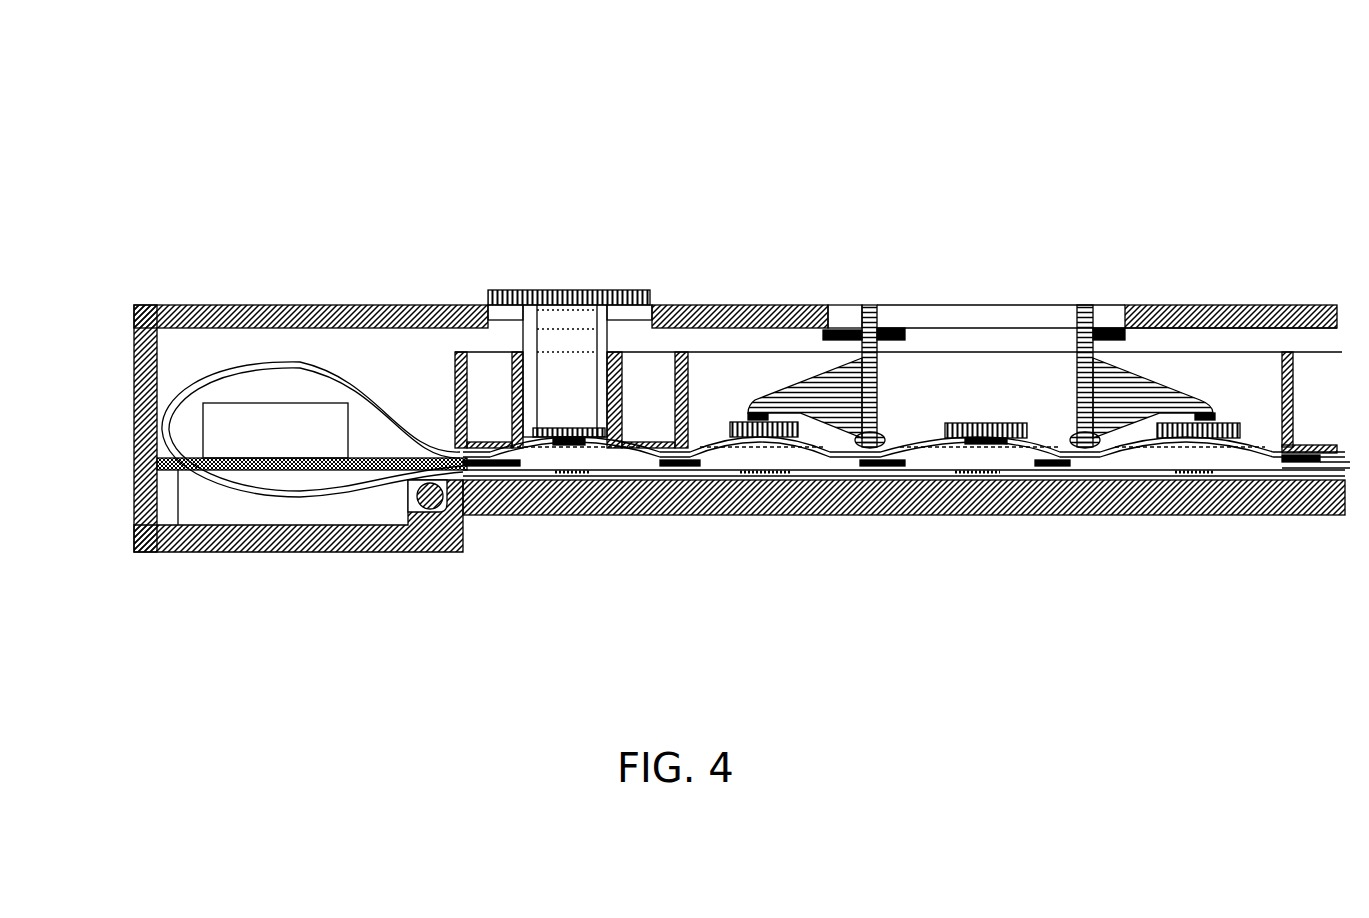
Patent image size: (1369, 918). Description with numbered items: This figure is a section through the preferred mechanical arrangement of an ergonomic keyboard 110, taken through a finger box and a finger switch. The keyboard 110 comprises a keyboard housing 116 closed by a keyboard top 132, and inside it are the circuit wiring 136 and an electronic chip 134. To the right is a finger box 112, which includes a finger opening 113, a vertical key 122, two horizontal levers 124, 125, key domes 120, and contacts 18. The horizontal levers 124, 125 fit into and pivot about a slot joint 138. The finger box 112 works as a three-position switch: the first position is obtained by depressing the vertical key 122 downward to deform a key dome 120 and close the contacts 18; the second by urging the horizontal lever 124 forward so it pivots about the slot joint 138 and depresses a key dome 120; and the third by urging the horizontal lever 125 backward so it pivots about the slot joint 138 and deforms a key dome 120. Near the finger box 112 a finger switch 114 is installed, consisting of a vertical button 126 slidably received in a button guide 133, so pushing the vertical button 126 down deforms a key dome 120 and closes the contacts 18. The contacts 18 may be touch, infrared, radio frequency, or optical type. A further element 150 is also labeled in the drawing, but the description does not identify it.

The contacts 18 is at (950, 450).
The ergonomic keyboard 110 is at (697, 80).
The finger box 112 is at (881, 298).
The finger opening 113 is at (1038, 378).
The finger switch 114 is at (480, 150).
The keyboard housing 116 is at (268, 554).
The key dome 120 is at (540, 453).
The vertical key 122 is at (973, 422).
The horizontal lever 124 is at (890, 376).
The horizontal lever 125 is at (1155, 380).
The vertical button 126 is at (556, 290).
The keyboard top 132 is at (307, 305).
The button guide 133 is at (630, 393).
The electronic chip 134 is at (268, 416).
The circuit wiring 136 is at (235, 490).
The slot joint 138 is at (1100, 440).
The actuator cap 150 is at (957, 420).